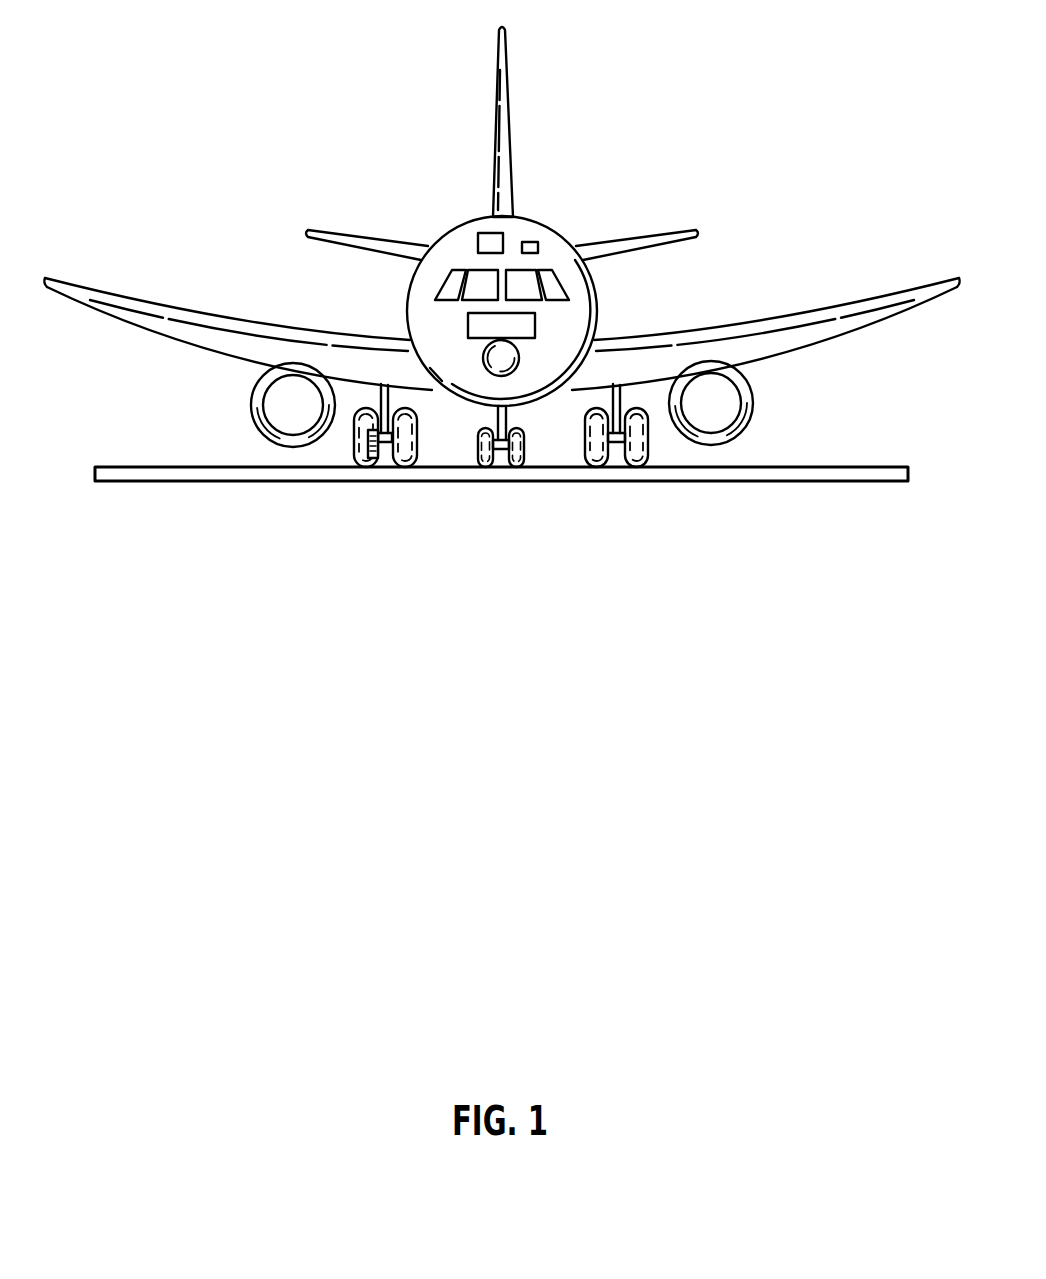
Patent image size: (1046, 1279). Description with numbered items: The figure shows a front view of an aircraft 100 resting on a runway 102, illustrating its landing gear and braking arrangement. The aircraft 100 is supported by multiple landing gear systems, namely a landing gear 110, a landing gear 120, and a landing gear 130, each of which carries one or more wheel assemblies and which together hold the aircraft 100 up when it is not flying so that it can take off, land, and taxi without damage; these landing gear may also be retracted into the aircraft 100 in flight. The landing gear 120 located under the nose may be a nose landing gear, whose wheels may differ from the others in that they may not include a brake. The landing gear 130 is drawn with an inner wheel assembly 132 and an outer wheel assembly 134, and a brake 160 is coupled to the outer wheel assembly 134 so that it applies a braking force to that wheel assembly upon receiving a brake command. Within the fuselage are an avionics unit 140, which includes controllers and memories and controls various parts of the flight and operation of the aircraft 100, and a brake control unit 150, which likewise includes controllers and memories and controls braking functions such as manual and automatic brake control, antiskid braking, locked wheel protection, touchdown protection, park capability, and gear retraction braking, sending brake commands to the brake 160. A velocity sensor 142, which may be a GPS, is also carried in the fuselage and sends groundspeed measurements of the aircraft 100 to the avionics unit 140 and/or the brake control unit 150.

The aircraft 100 is at (345, 66).
The runway 102 is at (838, 467).
The landing gear 110 is at (649, 455).
The landing gear 120 is at (525, 455).
The landing gear 130 is at (377, 498).
The inner wheel assembly 132 is at (412, 468).
The outer wheel assembly 134 is at (367, 468).
The avionics unit 140 is at (504, 244).
The velocity sensor 142 is at (539, 247).
The brake control unit 150 is at (536, 328).
The brake 160 is at (373, 468).